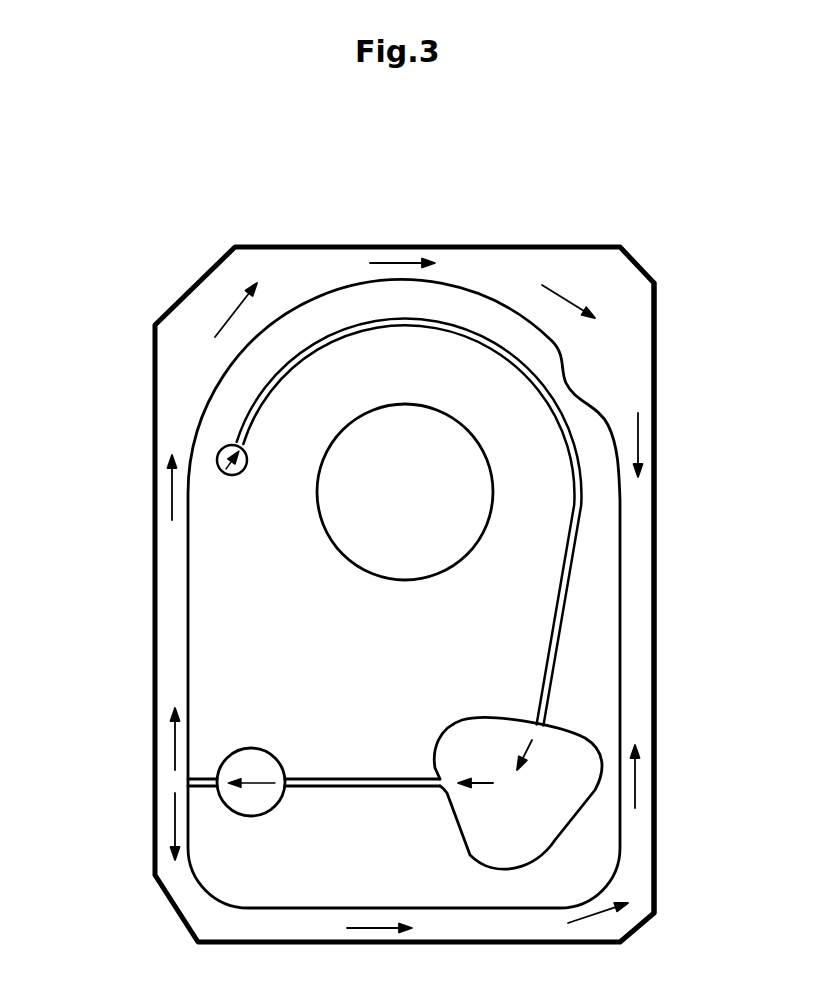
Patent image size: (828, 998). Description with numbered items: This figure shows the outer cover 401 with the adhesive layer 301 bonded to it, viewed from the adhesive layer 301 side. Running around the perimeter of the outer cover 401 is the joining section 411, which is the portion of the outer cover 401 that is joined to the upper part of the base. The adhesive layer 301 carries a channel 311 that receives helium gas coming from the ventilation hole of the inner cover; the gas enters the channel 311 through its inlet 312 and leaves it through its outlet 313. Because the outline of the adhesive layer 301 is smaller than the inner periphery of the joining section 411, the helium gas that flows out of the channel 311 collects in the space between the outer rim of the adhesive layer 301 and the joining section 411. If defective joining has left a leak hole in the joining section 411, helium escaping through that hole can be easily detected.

The adhesive layer 301 is at (490, 296).
The channel 311 is at (565, 590).
The inlet 312 is at (243, 473).
The outlet 313 is at (190, 778).
The outer cover 401 is at (155, 648).
The joining section 411 is at (655, 348).